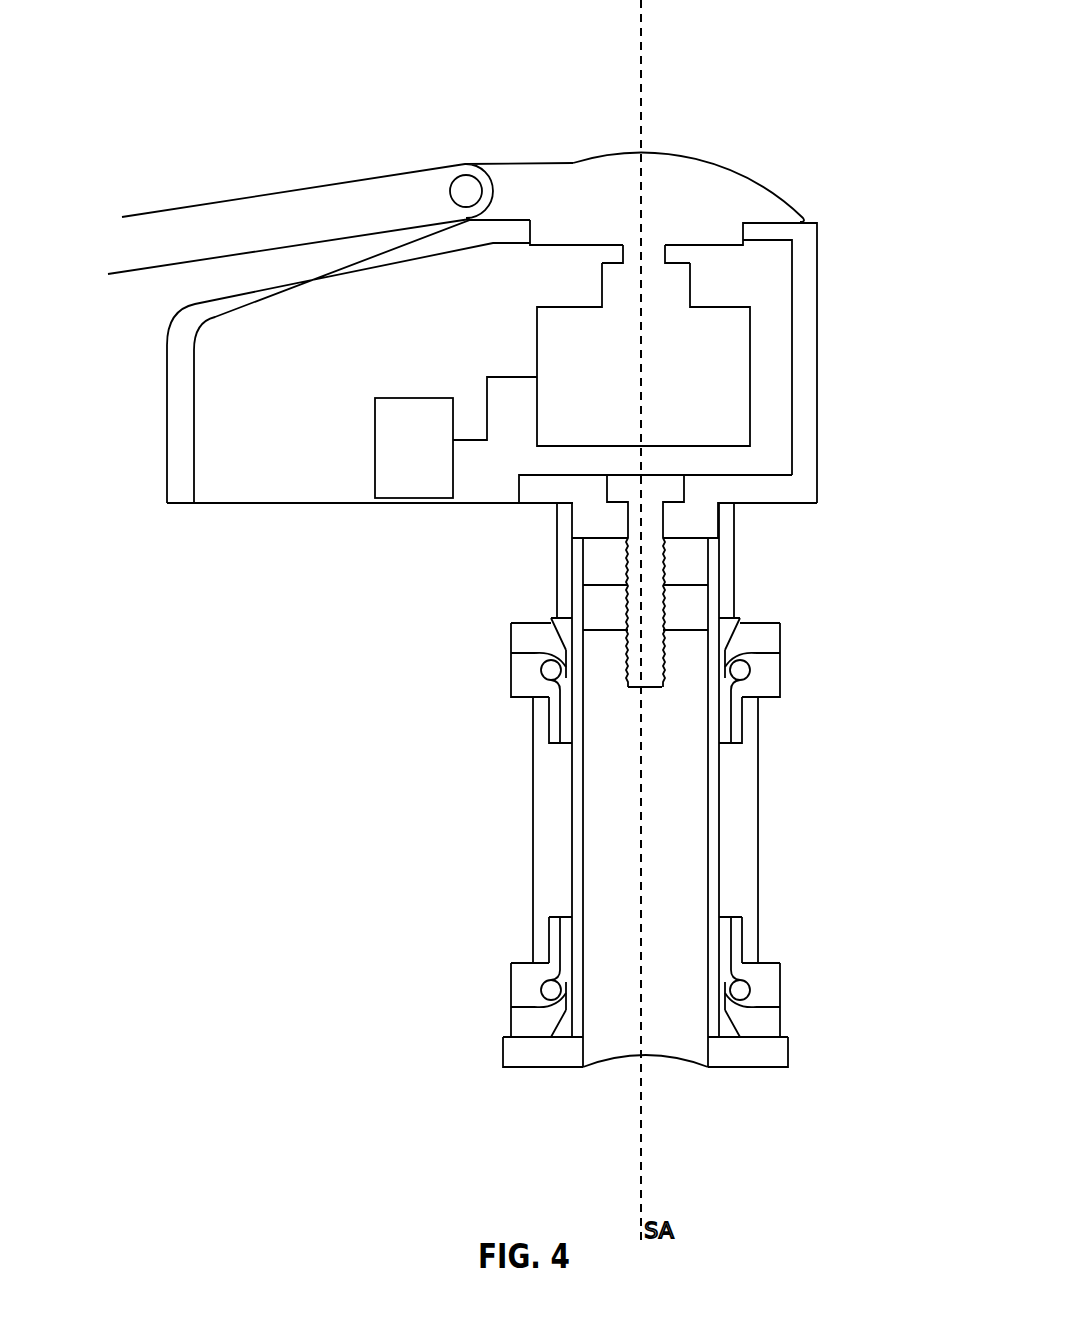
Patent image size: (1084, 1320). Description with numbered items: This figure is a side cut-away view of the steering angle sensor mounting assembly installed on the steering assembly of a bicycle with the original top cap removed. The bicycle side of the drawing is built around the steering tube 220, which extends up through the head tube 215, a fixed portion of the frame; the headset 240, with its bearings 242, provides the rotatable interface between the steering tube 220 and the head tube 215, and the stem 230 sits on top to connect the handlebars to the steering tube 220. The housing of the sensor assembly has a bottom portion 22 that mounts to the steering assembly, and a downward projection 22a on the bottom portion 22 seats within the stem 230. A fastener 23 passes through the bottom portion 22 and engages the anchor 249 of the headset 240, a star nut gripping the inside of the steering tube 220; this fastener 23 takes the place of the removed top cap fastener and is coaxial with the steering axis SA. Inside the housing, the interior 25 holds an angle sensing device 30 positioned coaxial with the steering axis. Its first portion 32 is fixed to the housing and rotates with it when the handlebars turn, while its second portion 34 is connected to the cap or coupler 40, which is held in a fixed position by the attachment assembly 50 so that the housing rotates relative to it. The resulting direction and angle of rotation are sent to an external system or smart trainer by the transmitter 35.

The bottom portion 22 is at (543, 490).
The downward projection 22a is at (697, 525).
The fastener 23 is at (663, 488).
The interior 25 is at (208, 393).
The angle sensing device 30 is at (772, 375).
The first portion 32 is at (700, 422).
The second portion 34 is at (652, 258).
The transmitter 35 is at (390, 468).
The cap 40 is at (690, 167).
The attachment assembly 50 is at (282, 153).
The head tube 215 is at (541, 820).
The steering tube 220 is at (742, 1055).
The stem 230 is at (560, 579).
The headset 240 is at (452, 645).
The bearings 242 is at (551, 670).
The anchor 249 is at (685, 607).